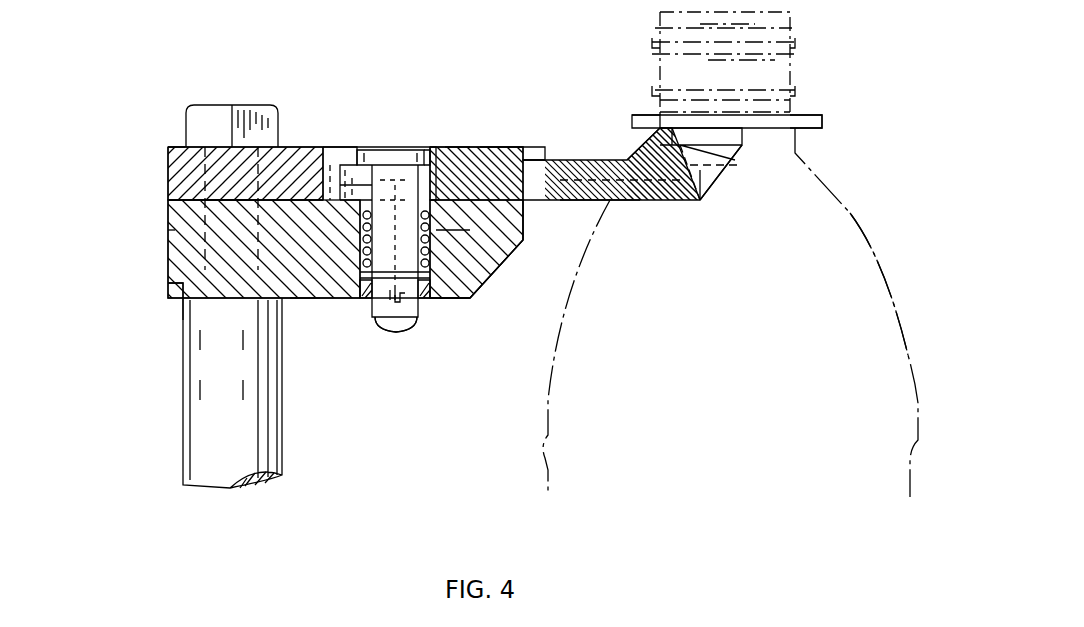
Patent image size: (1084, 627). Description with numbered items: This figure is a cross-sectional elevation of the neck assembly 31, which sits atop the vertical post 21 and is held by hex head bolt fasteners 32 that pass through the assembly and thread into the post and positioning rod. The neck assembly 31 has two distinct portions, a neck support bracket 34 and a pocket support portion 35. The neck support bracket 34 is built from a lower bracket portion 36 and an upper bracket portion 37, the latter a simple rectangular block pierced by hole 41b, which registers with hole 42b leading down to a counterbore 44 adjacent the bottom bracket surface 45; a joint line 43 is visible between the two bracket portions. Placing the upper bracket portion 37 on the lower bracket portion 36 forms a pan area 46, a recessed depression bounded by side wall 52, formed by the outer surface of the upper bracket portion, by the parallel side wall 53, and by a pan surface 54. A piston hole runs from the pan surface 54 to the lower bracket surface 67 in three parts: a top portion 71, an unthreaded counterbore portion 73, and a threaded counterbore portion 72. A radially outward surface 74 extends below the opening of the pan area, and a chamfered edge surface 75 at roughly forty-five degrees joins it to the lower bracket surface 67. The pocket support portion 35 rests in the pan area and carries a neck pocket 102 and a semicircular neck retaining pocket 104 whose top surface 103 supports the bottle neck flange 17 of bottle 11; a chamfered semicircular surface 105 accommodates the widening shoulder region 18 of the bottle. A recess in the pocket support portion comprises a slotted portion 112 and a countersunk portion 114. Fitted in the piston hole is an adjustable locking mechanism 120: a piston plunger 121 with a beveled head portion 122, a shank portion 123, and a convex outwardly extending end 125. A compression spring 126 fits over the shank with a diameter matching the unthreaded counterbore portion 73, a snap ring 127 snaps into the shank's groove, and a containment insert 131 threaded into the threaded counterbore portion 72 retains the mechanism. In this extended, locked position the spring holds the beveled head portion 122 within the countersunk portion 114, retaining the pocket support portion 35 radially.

The bottle 11 is at (540, 433).
The bottle neck flange 17 is at (818, 118).
The shoulder region 18 is at (850, 213).
The vertical post 21 is at (190, 388).
The neck assembly 31 is at (298, 78).
The hex head bolt fasteners 32 is at (205, 108).
The neck support bracket 34 is at (170, 143).
The pocket support portion 35 is at (600, 200).
The lower bracket portion 36 is at (305, 300).
The upper bracket portion 37 is at (168, 176).
The hole 41b is at (180, 150).
The hole 42b is at (193, 232).
The joint line 43 is at (205, 206).
The counterbore 44 is at (172, 287).
The bottom bracket surface 45 is at (195, 300).
The pan area 46 is at (500, 146).
The side wall 52 is at (340, 157).
The side wall 53 is at (330, 150).
The pan surface 54 is at (548, 174).
The lower bracket surface 67 is at (455, 300).
The top portion 71 is at (455, 160).
The threaded counterbore portion 72 is at (470, 297).
The unthreaded counterbore portion 73 is at (523, 225).
The radially outward surface 74 is at (528, 158).
The chamfered edge surface 75 is at (505, 268).
The neck pocket 102 is at (692, 130).
The top surface 103 is at (652, 122).
The neck retaining pocket 104 is at (636, 154).
The chamfered semicircular surface 105 is at (655, 172).
The slotted portion 112 is at (355, 195).
The countersunk portion 114 is at (430, 148).
The adjustable locking mechanism 120 is at (418, 325).
The piston plunger 121 is at (434, 150).
The beveled head portion 122 is at (397, 148).
The shank portion 123 is at (365, 222).
The outwardly extending end 125 is at (392, 333).
The compression spring 126 is at (180, 270).
The snap ring 127 is at (440, 238).
The containment insert 131 is at (365, 292).